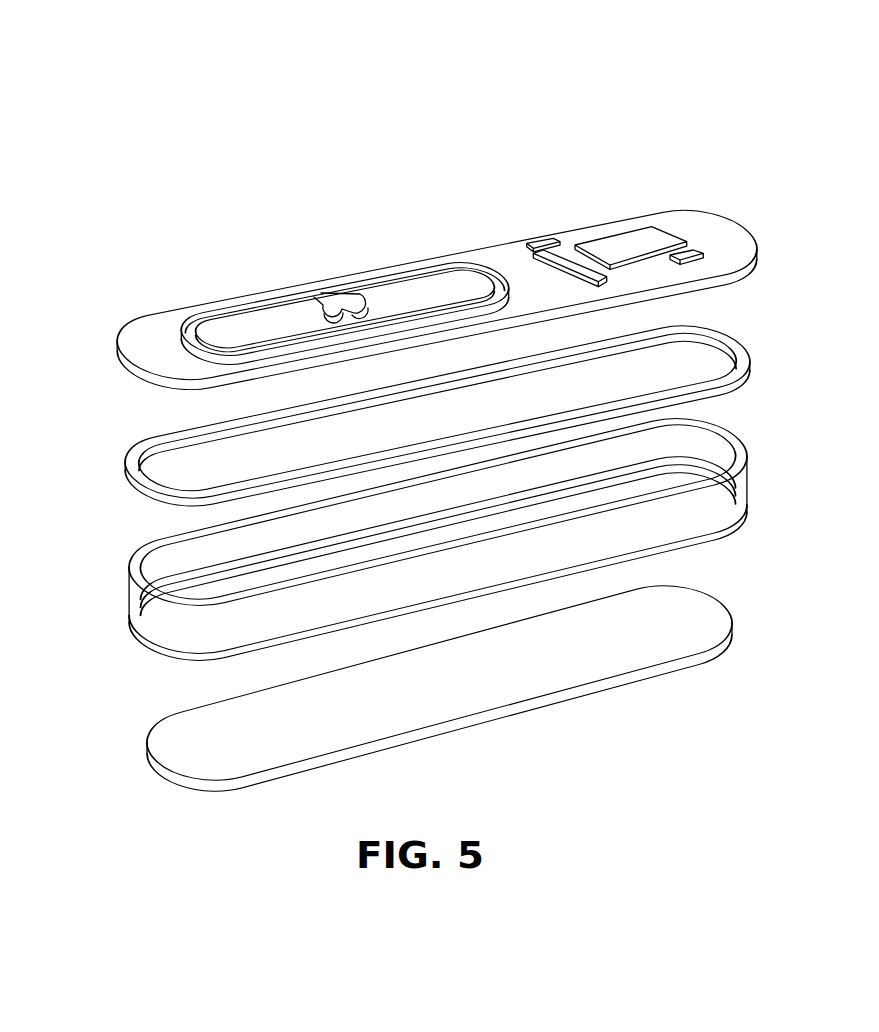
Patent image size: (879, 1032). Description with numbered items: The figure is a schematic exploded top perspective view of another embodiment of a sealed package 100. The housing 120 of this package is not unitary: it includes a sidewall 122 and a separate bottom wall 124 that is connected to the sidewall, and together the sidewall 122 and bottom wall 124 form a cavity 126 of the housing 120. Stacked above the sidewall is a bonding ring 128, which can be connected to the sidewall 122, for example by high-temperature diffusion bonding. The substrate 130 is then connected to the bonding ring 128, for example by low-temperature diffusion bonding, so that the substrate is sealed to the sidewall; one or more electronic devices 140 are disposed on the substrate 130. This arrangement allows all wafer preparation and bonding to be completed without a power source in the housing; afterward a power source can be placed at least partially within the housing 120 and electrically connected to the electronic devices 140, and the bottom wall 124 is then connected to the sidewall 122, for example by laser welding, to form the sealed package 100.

The sealed package 100 is at (658, 74).
The housing 120 is at (90, 670).
The sidewall 122 is at (752, 482).
The bottom wall 124 is at (707, 618).
The cavity 126 is at (703, 446).
The bonding ring 128 is at (750, 358).
The substrate 130 is at (757, 247).
The electronic devices 140 is at (590, 206).